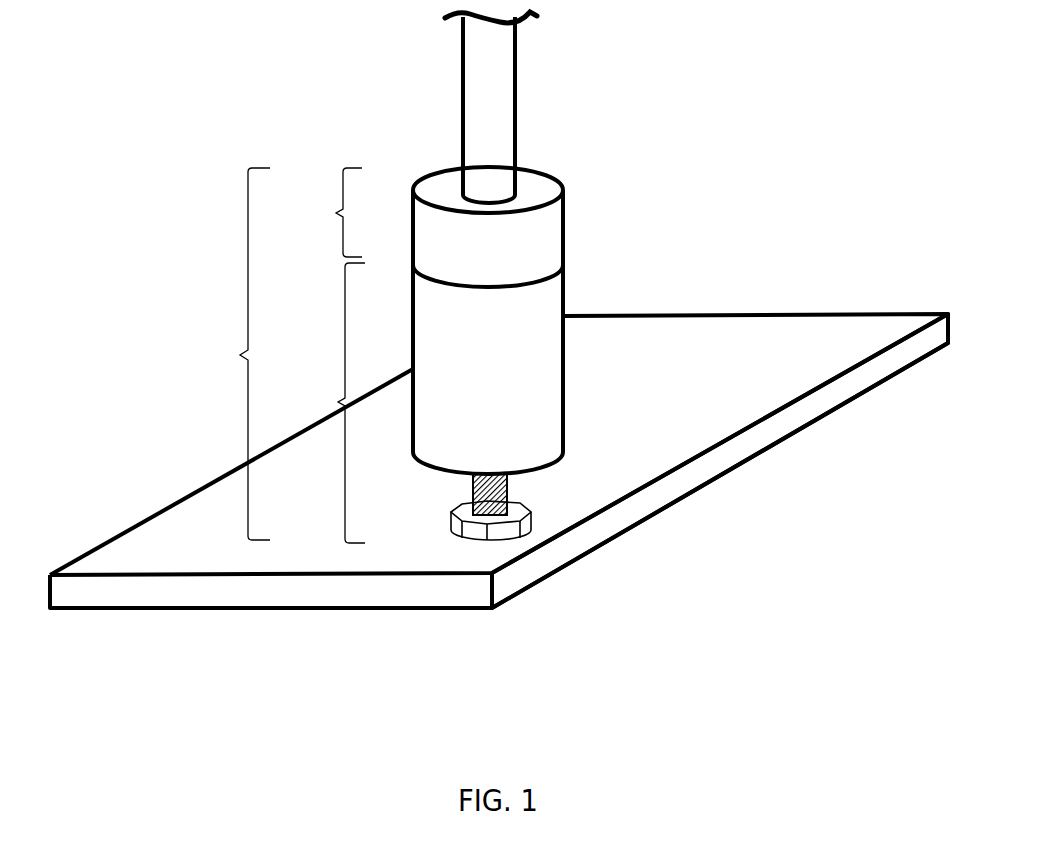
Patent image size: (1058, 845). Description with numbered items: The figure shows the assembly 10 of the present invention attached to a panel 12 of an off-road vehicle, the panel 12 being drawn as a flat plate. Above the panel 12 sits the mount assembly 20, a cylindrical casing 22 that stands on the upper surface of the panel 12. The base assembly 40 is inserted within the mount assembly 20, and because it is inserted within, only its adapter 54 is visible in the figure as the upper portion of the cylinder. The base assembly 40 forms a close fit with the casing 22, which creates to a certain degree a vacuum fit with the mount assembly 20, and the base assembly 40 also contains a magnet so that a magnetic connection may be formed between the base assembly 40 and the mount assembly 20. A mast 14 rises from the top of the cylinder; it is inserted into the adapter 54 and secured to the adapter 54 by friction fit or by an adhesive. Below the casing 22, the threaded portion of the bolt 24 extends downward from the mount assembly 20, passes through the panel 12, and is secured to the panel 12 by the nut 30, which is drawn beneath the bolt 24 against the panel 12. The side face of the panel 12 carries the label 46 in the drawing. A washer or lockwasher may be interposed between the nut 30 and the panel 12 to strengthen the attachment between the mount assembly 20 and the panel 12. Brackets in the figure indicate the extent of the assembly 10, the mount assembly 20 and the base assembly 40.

The assembly 10 is at (241, 355).
The panel 12 is at (672, 400).
The mast 14 is at (499, 107).
The mount assembly 20 is at (339, 401).
The casing 22 is at (488, 332).
The bolt 24 is at (540, 500).
The nut 30 is at (452, 540).
The base assembly 40 is at (337, 213).
The side face of plate 46 is at (720, 461).
The adapter 54 is at (499, 255).